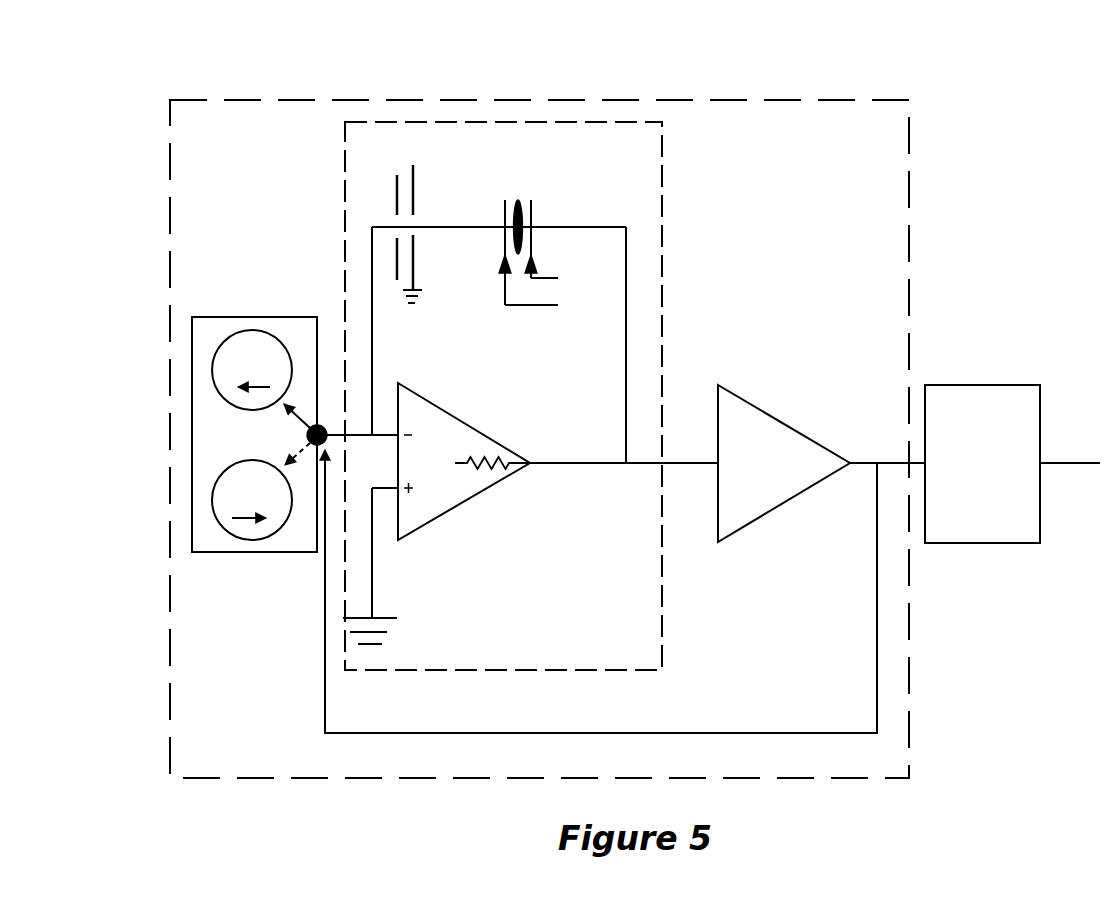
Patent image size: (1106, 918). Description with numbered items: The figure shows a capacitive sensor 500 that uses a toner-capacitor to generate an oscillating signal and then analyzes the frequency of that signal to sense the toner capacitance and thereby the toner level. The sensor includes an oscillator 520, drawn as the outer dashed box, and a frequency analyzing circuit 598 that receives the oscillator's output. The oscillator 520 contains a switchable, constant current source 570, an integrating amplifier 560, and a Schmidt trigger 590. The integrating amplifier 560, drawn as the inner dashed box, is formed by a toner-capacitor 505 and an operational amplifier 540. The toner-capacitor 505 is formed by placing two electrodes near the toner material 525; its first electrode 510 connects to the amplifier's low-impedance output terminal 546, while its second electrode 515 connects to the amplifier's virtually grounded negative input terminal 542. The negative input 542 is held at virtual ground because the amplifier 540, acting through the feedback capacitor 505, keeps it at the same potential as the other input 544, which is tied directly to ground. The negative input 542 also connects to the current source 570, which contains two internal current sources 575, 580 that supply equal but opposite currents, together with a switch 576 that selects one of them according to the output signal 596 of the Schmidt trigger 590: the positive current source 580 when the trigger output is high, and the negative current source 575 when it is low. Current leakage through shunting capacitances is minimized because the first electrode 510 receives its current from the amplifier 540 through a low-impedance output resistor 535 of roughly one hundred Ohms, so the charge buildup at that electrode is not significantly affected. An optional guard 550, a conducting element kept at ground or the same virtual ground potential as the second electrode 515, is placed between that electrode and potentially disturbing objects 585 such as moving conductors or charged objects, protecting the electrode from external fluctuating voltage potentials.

The sensor 500 is at (788, 70).
The toner-capacitor 505 is at (563, 238).
The first electrode 510 is at (572, 246).
The second electrode 515 is at (559, 259).
The oscillator 520 is at (568, 82).
The toner material 525 is at (528, 212).
The output resistor 535 is at (510, 423).
The operational amplifier 540 is at (481, 471).
The negative input terminal 542 is at (419, 422).
The input 544 is at (414, 501).
The output terminal 546 is at (545, 460).
The guard 550 is at (419, 170).
The integrating amplifier 560 is at (683, 246).
The current source 570 is at (223, 312).
The negative current source 575 is at (252, 370).
The switch 576 is at (289, 423).
The positive current source 580 is at (252, 500).
The disturbing objects 585 is at (395, 178).
The Schmidt trigger 590 is at (784, 463).
The output signal 596 is at (867, 461).
The frequency analyzing circuit 598 is at (982, 464).